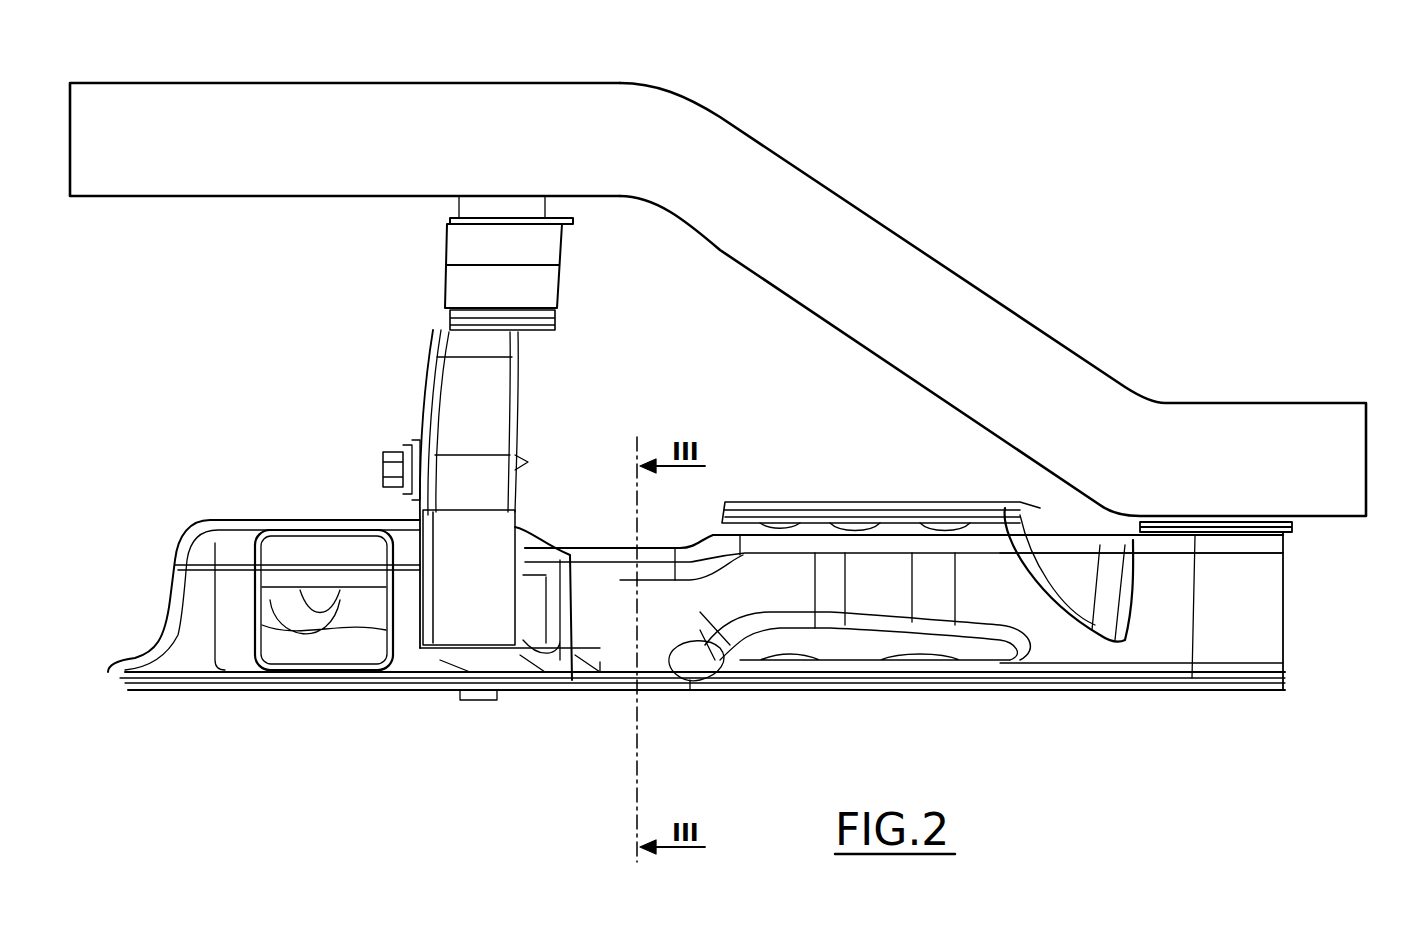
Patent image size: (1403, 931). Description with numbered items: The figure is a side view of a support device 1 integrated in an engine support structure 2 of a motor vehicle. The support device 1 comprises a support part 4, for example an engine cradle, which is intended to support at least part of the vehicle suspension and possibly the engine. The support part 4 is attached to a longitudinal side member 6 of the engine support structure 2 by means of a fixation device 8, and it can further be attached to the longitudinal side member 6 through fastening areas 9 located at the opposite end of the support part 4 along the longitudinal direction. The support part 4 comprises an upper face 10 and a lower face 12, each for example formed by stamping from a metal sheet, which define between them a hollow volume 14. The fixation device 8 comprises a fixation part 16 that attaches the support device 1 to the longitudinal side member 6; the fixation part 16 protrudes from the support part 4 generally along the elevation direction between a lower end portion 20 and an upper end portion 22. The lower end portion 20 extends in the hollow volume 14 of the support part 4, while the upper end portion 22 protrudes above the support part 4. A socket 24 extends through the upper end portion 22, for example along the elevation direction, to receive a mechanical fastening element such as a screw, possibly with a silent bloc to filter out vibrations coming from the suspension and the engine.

The support device 1 is at (602, 698).
The engine support structure 2 is at (1053, 251).
The support part 4 is at (672, 667).
The longitudinal side member 6 is at (446, 138).
The fixation device 8 is at (465, 375).
The fastening areas 9 is at (1217, 522).
The upper face 10 is at (718, 532).
The lower face 12 is at (760, 680).
The hollow volume 14 is at (1287, 630).
The fixation part 16 is at (475, 443).
The lower end portion 20 is at (452, 617).
The upper end portion 22 is at (480, 243).
The socket 24 is at (507, 210).